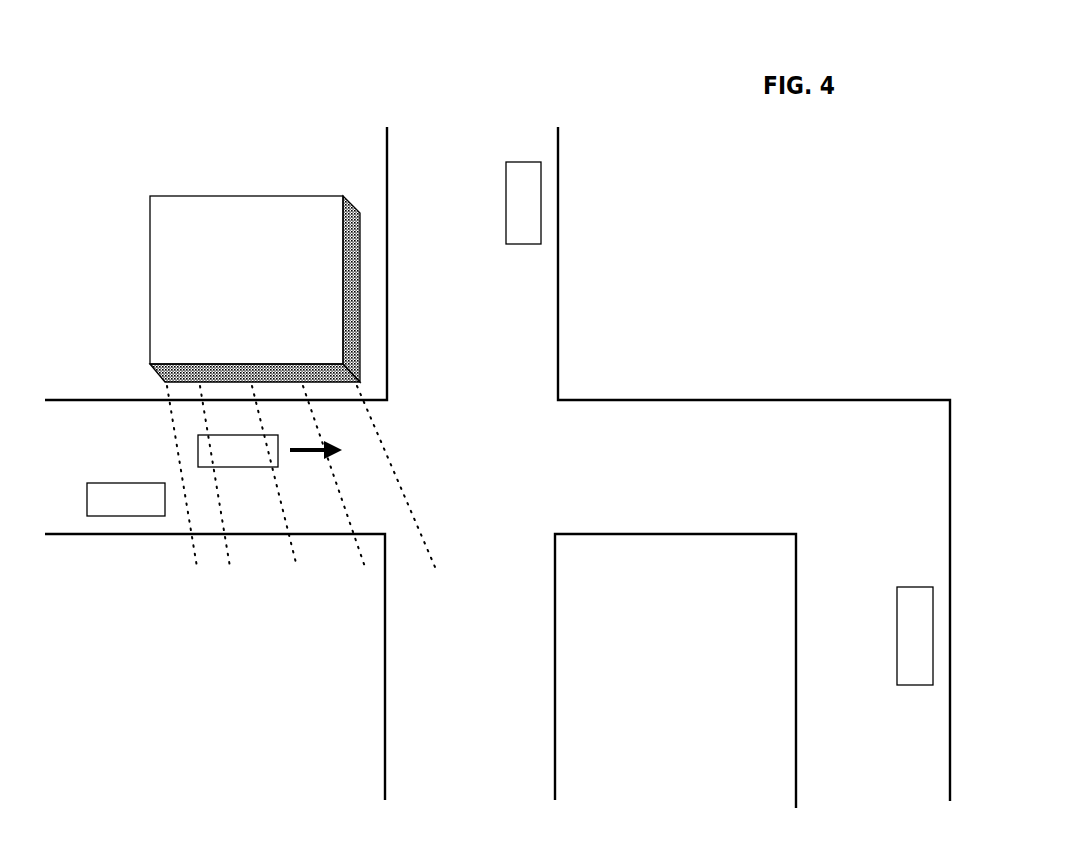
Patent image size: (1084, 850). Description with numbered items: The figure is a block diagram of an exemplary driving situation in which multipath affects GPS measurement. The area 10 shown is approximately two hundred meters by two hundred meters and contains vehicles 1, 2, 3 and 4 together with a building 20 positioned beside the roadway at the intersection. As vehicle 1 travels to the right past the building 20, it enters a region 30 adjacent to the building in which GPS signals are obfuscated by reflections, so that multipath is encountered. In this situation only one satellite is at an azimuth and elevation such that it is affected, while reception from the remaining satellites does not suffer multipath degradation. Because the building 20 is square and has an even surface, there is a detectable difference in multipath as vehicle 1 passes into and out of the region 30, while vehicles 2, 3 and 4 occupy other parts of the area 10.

The area 10 is at (332, 86).
The building 20 is at (255, 289).
The region 30 is at (380, 484).
The vehicle 1 is at (270, 451).
The vehicle 2 is at (126, 499).
The vehicle 3 is at (523, 203).
The vehicle 4 is at (915, 636).